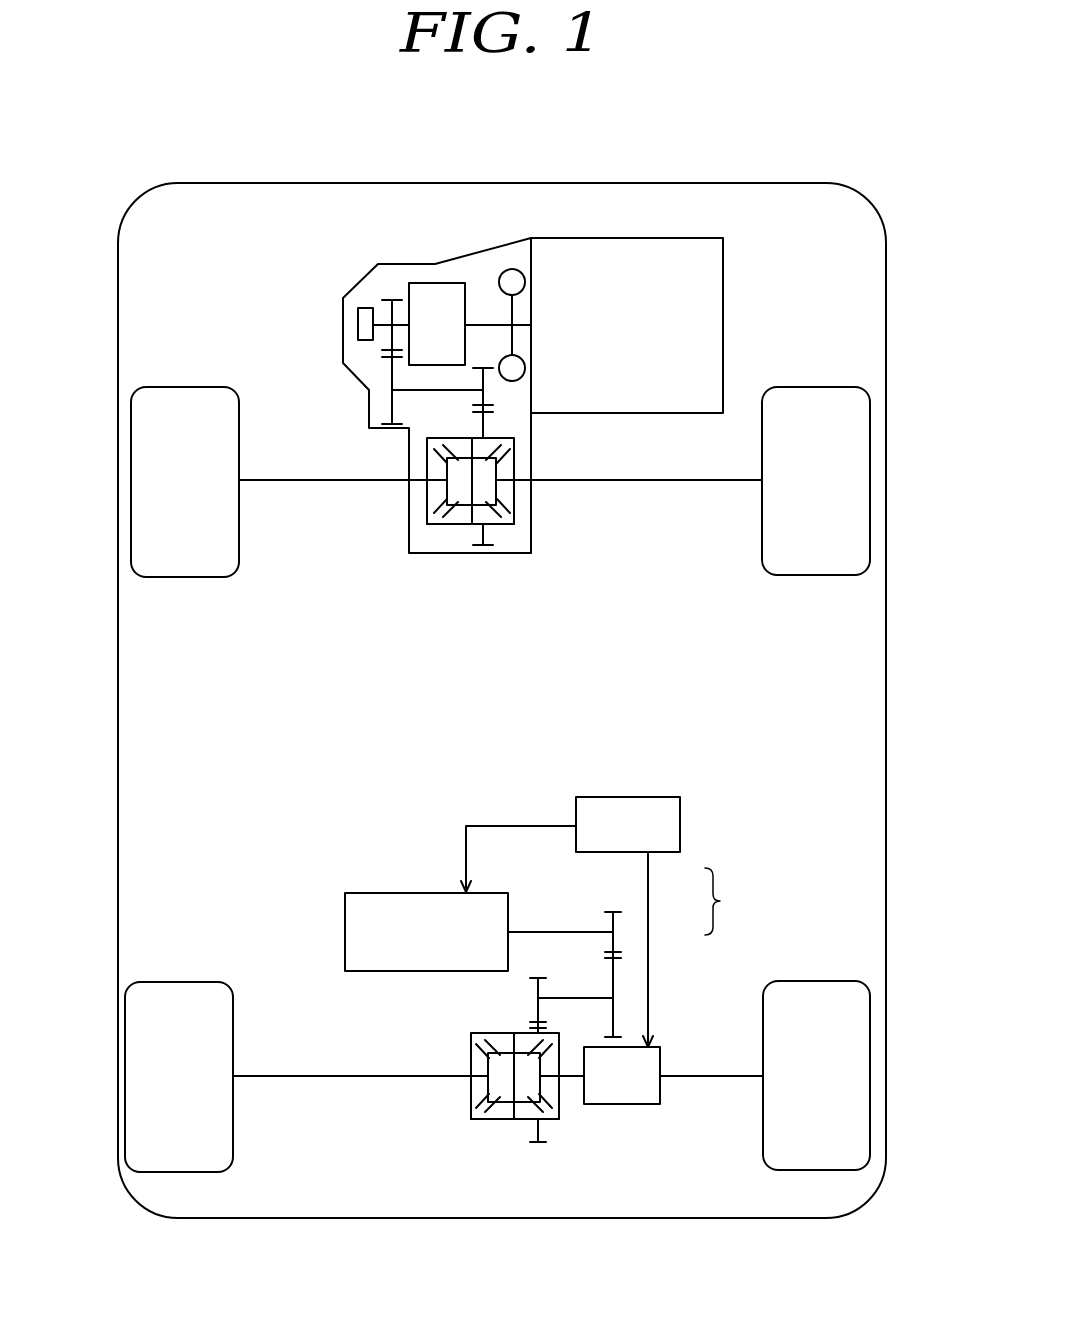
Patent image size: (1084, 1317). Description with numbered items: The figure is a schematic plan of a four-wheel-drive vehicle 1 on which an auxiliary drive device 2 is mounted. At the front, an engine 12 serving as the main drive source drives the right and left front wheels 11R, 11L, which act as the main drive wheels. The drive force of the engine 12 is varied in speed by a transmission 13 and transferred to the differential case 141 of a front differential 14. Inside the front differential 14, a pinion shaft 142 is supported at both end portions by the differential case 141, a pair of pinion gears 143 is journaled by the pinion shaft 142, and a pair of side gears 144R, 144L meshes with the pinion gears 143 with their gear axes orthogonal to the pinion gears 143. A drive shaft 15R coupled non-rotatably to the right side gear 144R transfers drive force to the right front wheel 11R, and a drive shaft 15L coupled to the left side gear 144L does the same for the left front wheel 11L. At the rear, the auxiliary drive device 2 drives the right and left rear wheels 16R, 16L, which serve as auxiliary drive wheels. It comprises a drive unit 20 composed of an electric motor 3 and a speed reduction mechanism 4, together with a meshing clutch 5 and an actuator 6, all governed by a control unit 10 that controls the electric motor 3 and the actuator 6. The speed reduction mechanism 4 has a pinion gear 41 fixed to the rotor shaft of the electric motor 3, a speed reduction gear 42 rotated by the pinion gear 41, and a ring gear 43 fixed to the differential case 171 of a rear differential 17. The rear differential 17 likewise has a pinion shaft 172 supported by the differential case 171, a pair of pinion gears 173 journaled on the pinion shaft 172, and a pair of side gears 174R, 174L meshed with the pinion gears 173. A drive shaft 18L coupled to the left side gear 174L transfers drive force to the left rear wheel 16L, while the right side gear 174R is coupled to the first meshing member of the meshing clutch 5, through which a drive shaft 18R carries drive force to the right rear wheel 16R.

The four-wheel-drive vehicle 1 is at (745, 183).
The auxiliary drive device 2 is at (550, 966).
The electric motor 3 is at (508, 907).
The speed reduction mechanism 4 is at (613, 1043).
The meshing clutch 5 is at (638, 1117).
The actuator 6 is at (645, 1104).
The control unit 10 is at (645, 797).
The left front wheel 11L is at (131, 478).
The right front wheel 11R is at (870, 473).
The engine 12 is at (660, 238).
The transmission 13 is at (410, 278).
The front differential 14 is at (464, 488).
The differential case 141 is at (438, 523).
The pinion shaft 142 is at (469, 480).
The pinion gears 143 is at (483, 455).
The left side gear 144L is at (447, 486).
The right side gear 144R is at (496, 469).
The drive shaft 15L is at (323, 480).
The drive shaft 15R is at (687, 481).
The left rear wheel 16L is at (125, 1077).
The right rear wheel 16R is at (870, 1077).
The rear differential 17 is at (512, 1083).
The differential case 171 is at (475, 1121).
The pinion shaft 172 is at (512, 1077).
The pinion gears 173 is at (505, 1052).
The left side gear 174L is at (488, 1082).
The right side gear 174R is at (542, 1085).
The drive shaft 18L is at (323, 1078).
The drive shaft 18R is at (690, 1077).
The drive unit 20 is at (550, 1026).
The pinion gear 41 is at (615, 940).
The speed reduction gear 42 is at (613, 1012).
The ring gear 43 is at (538, 1135).